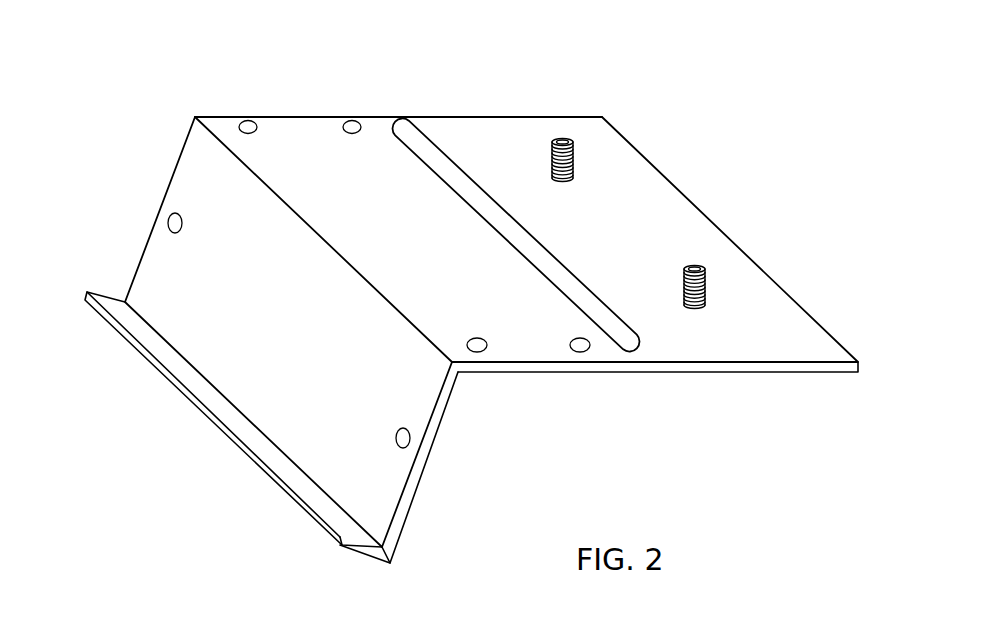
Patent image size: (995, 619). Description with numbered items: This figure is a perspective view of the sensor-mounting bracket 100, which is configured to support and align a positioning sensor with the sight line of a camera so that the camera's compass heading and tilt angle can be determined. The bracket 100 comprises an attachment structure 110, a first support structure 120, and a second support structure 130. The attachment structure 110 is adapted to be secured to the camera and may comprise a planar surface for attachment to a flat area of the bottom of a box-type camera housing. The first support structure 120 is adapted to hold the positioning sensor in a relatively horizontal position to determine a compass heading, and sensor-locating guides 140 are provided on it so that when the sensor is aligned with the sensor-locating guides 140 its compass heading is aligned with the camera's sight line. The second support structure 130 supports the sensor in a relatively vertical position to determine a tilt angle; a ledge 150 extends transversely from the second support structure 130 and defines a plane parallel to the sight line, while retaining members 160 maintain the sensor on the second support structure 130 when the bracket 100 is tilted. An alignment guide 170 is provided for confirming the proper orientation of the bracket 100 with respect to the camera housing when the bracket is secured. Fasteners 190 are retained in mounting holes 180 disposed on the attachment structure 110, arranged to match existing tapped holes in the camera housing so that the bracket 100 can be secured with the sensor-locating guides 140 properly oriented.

The sensor-mounting bracket 100 is at (717, 151).
The attachment structure 110 is at (770, 307).
The first support structure 120 is at (300, 122).
The second support structure 130 is at (190, 172).
The sensor-locating guides 140 is at (258, 131).
The ledge 150 is at (120, 306).
The retaining members 160 is at (183, 228).
The alignment guide 170 is at (535, 256).
The mounting holes 180 is at (552, 169).
The fasteners 190 is at (561, 138).